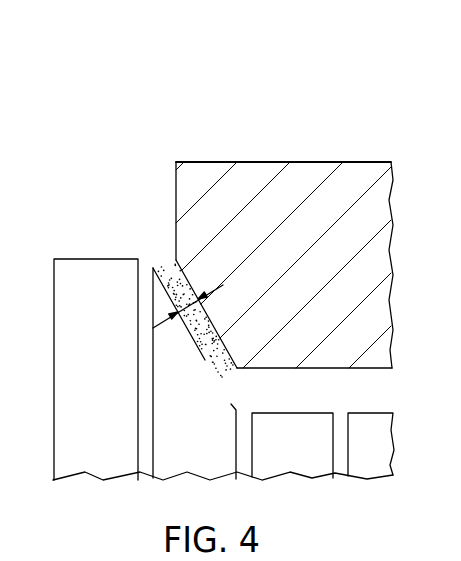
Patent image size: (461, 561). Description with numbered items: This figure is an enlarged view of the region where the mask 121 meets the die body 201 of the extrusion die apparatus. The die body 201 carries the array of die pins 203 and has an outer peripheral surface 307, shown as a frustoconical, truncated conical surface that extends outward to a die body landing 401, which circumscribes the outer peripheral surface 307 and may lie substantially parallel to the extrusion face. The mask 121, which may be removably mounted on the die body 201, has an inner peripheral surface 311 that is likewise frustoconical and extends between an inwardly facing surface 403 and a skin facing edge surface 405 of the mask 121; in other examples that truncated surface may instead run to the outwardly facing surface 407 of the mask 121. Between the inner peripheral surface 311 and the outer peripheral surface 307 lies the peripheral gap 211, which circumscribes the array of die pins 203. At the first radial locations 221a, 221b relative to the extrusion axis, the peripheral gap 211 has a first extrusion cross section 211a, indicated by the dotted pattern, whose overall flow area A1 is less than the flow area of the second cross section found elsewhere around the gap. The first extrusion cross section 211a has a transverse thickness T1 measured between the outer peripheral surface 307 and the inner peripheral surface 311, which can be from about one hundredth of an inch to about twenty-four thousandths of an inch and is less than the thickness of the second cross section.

The mask 121 is at (372, 162).
The skin facing edge surface 405 is at (168, 166).
The outwardly facing surface 407 is at (341, 153).
The first extrusion cross section 211a is at (190, 250).
The first radial location 221a is at (167, 263).
The first radial location 221b is at (150, 222).
The overall flow area of the first extrusion cross section A1 is at (184, 283).
The transverse thickness of the first extrusion cross section T1 is at (199, 299).
The outer peripheral surface 307 is at (204, 345).
The peripheral gap 211 is at (205, 358).
The inner peripheral surface 311 is at (226, 363).
The die body landing 401 is at (299, 402).
The inwardly facing surface 403 is at (375, 380).
The die body 201 is at (59, 244).
The array of die pins 203 is at (93, 468).